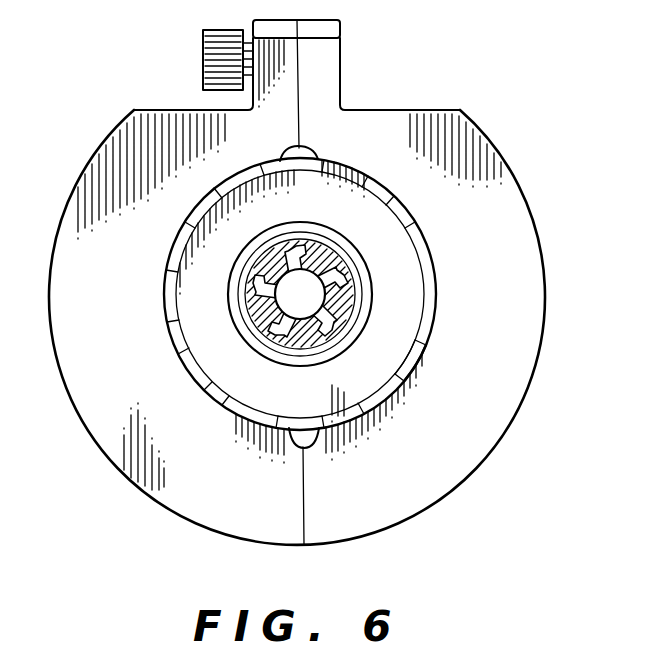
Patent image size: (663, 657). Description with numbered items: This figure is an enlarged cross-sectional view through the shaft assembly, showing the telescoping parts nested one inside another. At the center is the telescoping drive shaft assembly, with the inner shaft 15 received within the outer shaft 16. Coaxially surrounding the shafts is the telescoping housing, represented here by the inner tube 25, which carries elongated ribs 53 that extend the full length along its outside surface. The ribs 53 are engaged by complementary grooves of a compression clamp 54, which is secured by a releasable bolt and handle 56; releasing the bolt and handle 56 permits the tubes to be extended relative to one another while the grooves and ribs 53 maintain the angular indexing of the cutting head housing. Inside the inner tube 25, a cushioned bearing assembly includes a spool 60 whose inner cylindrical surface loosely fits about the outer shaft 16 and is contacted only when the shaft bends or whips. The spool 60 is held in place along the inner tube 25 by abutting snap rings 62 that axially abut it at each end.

The compression clamp 54 is at (507, 242).
The releasable bolt and handle 56 is at (213, 56).
The snap rings 62 is at (202, 343).
The inner tube 25 is at (432, 339).
The elongated ribs 53 is at (300, 148).
The spool 60 is at (346, 246).
The outer shaft 16 is at (351, 312).
The inner shaft 15 is at (326, 329).